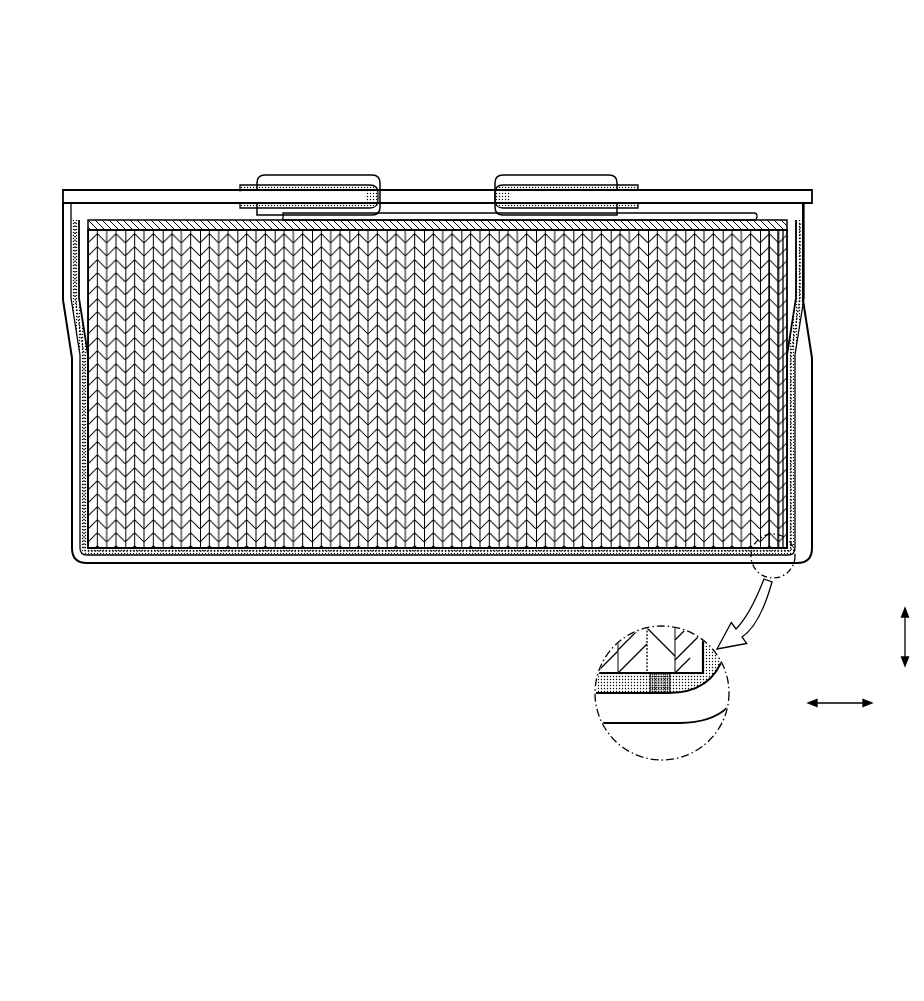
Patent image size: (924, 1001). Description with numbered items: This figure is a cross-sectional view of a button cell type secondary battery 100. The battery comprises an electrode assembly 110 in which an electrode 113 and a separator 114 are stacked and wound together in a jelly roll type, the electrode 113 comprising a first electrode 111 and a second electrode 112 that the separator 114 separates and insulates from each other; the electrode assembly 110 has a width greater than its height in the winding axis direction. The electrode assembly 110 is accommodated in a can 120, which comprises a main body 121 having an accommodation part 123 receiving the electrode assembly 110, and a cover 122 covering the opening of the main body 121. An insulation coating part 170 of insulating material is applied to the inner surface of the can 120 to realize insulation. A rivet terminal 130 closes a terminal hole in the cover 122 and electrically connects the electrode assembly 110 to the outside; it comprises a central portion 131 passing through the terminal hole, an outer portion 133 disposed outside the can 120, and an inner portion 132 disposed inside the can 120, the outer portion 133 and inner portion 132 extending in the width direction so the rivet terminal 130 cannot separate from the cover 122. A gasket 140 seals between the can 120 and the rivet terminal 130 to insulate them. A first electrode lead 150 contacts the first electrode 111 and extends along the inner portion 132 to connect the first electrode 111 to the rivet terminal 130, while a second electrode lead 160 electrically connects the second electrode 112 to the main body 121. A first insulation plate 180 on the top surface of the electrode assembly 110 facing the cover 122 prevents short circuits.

The secondary battery 100 is at (813, 58).
The electrode assembly 110 is at (506, 389).
The first electrode 111 is at (772, 516).
The second electrode 112 is at (782, 480).
The electrode 113 is at (840, 389).
The separator 114 is at (792, 448).
The can 120 is at (454, 382).
The main body 121 is at (62, 217).
The cover 122 is at (81, 198).
The accommodation part 123 is at (806, 249).
The rivet terminal 130 is at (560, 128).
The central portion 131 is at (487, 189).
The inner portion 132 is at (492, 84).
The outer portion 133 is at (537, 189).
The gasket 140 is at (246, 180).
The first electrode lead 150 is at (712, 213).
The second electrode lead 160 is at (660, 695).
The insulation coating part 170 is at (800, 286).
The first insulation plate 180 is at (181, 220).